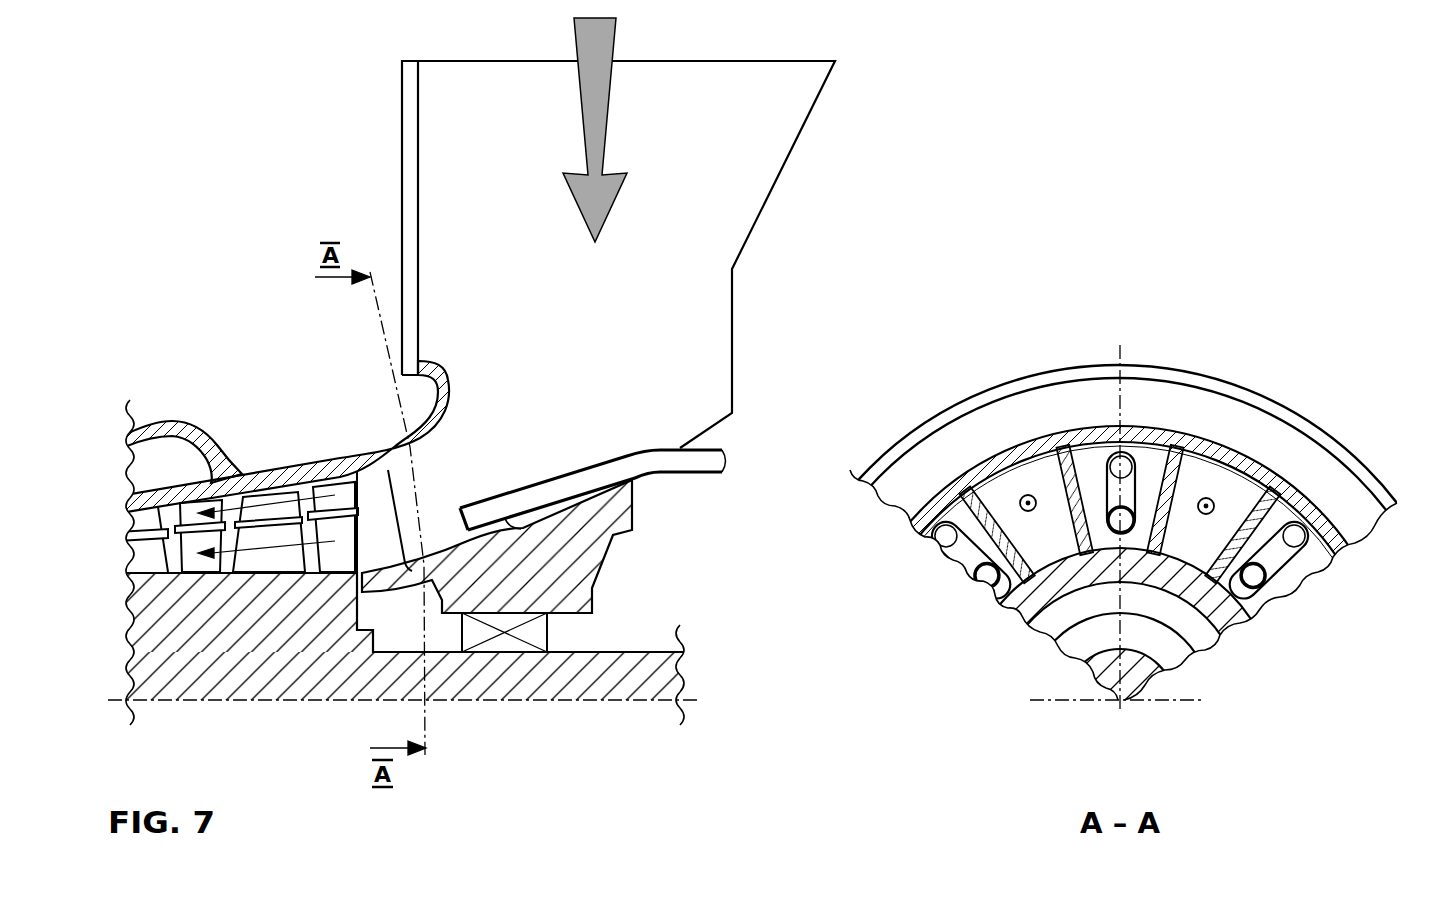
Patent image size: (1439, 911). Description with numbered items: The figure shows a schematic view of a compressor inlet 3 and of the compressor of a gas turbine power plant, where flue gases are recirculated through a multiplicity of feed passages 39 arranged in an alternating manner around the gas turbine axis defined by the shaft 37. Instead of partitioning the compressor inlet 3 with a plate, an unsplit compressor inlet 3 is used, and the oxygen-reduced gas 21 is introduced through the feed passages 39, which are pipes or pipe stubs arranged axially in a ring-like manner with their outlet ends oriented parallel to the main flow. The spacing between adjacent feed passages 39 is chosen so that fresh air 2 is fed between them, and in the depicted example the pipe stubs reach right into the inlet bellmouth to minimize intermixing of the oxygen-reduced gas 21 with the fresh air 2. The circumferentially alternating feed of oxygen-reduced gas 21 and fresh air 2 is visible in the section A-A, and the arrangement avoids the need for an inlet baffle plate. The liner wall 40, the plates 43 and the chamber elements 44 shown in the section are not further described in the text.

The fresh air 2 is at (1283, 318).
The compressor inlet 3 is at (787, 208).
The oxygen-reduced gas 21 is at (802, 462).
The shaft 37 is at (575, 683).
The feed passages 39 is at (682, 463).
The liner wall 40 is at (303, 475).
The guide plate 43 is at (335, 555).
The chamber element 44 is at (270, 562).